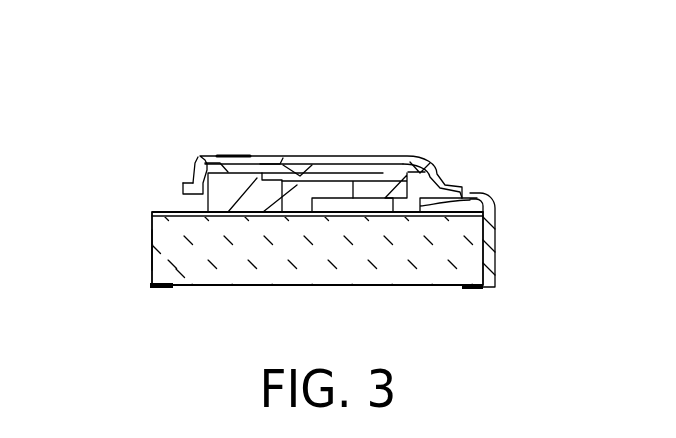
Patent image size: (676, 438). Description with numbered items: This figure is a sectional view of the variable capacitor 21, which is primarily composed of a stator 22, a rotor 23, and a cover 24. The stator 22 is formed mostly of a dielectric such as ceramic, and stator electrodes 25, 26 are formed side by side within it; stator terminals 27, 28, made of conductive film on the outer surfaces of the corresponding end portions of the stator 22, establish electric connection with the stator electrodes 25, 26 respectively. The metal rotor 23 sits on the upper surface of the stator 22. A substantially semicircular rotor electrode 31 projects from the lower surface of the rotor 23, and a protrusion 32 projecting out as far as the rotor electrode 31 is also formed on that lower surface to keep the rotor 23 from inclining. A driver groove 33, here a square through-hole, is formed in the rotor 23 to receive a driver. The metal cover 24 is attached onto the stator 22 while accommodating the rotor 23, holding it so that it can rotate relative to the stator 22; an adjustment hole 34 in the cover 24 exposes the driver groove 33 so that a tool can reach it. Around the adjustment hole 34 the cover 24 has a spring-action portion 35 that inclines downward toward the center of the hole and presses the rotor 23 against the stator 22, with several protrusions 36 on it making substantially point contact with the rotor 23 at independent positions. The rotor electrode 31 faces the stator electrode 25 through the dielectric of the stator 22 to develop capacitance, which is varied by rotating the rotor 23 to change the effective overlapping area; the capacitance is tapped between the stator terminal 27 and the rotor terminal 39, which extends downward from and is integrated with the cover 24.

The variable capacitor 21 is at (168, 62).
The stator 22 is at (293, 286).
The rotor 23 is at (360, 157).
The cover 24 is at (438, 160).
The stator electrode 25 is at (222, 205).
The stator electrode 26 is at (383, 218).
The stator terminal 27 is at (150, 253).
The stator terminal 28 is at (473, 290).
The rotor electrode 31 is at (251, 207).
The protrusion 32 is at (477, 194).
The driver groove 33 is at (303, 178).
The adjustment hole 34 is at (273, 168).
The spring-action portion 35 is at (222, 153).
The protrusions 36 is at (298, 156).
The rotor terminal 39 is at (497, 263).